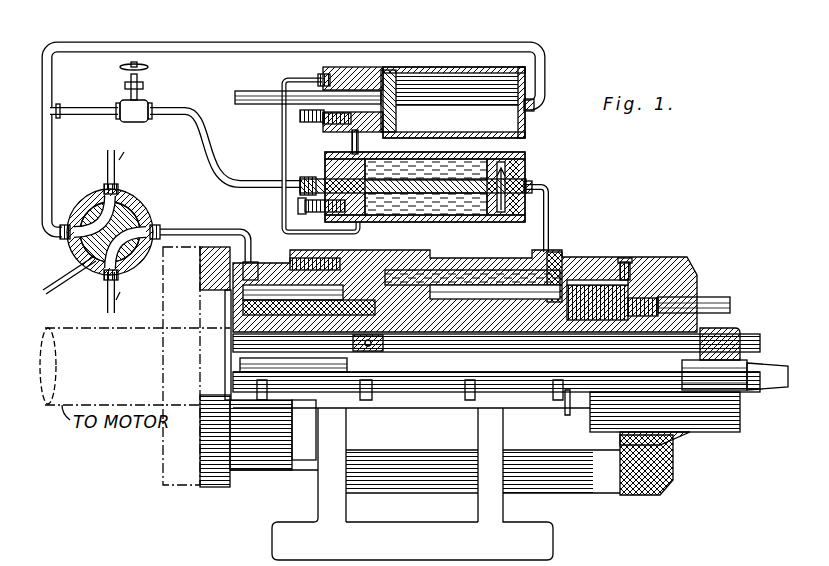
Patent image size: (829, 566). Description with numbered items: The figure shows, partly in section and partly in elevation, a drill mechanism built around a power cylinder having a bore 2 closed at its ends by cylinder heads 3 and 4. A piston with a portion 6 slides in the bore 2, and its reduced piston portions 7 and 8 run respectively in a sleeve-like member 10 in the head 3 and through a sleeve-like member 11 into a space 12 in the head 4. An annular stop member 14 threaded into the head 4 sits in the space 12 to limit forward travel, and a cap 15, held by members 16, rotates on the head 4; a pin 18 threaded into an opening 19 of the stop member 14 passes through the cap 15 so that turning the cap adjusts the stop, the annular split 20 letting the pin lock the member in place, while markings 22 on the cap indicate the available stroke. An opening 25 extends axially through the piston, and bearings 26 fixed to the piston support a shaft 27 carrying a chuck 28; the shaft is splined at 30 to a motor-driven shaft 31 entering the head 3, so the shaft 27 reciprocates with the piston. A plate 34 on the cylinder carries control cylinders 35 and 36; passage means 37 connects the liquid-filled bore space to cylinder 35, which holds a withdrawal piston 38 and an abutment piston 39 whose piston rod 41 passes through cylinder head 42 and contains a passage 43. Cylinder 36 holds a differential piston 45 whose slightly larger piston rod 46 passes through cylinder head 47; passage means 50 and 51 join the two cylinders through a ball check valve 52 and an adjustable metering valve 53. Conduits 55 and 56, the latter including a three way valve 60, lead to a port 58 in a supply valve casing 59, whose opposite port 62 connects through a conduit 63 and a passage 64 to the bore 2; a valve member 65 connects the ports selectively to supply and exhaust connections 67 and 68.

The bore 2 is at (446, 300).
The cylinder head 3 is at (275, 466).
The cylinder head 4 is at (584, 261).
The piston portion 6 is at (433, 286).
The reduced piston portion 7 is at (238, 322).
The reduced piston portion 8 is at (522, 326).
The sleeve-like member 10 is at (235, 330).
The sleeve-like member 11 is at (560, 262).
The space 12 is at (600, 290).
The annular stop member 14 is at (690, 437).
The cap 15 is at (675, 260).
The members 16 is at (628, 260).
The pin 18 is at (712, 300).
The opening 19 is at (625, 318).
The annular split 20 is at (652, 352).
The markings 22 is at (600, 470).
The opening 25 is at (562, 342).
The bearings 26 is at (380, 348).
The shaft 27 is at (505, 396).
The chuck 28 is at (788, 375).
The spline 30 is at (288, 366).
The shaft 31 is at (236, 348).
The plate 34 is at (505, 152).
The control cylinder 35 is at (483, 210).
The control cylinder 36 is at (455, 66).
The passage means 37 is at (556, 250).
The withdrawal piston 38 is at (515, 170).
The abutment piston 39 is at (500, 160).
The piston rod 41 is at (412, 200).
The cylinder head 42 is at (336, 166).
The passage 43 is at (452, 205).
The differential piston 45 is at (396, 104).
The piston rod 46 is at (252, 94).
The cylinder head 47 is at (358, 68).
The passage means 50 is at (351, 140).
The passage means 51 is at (283, 138).
The ball check valve 52 is at (400, 118).
The adjustable metering valve 53 is at (366, 210).
The conduit 55 is at (246, 48).
The conduit 56 is at (190, 108).
The port 58 is at (54, 243).
The supply valve casing 59 is at (69, 278).
The three way valve 60 is at (128, 100).
The port 62 is at (158, 230).
The conduit 63 is at (204, 230).
The passage 64 is at (291, 258).
The valve member 65 is at (125, 212).
The pressure fluid supply connection 67 is at (107, 305).
The exhaust connection 68 is at (107, 170).